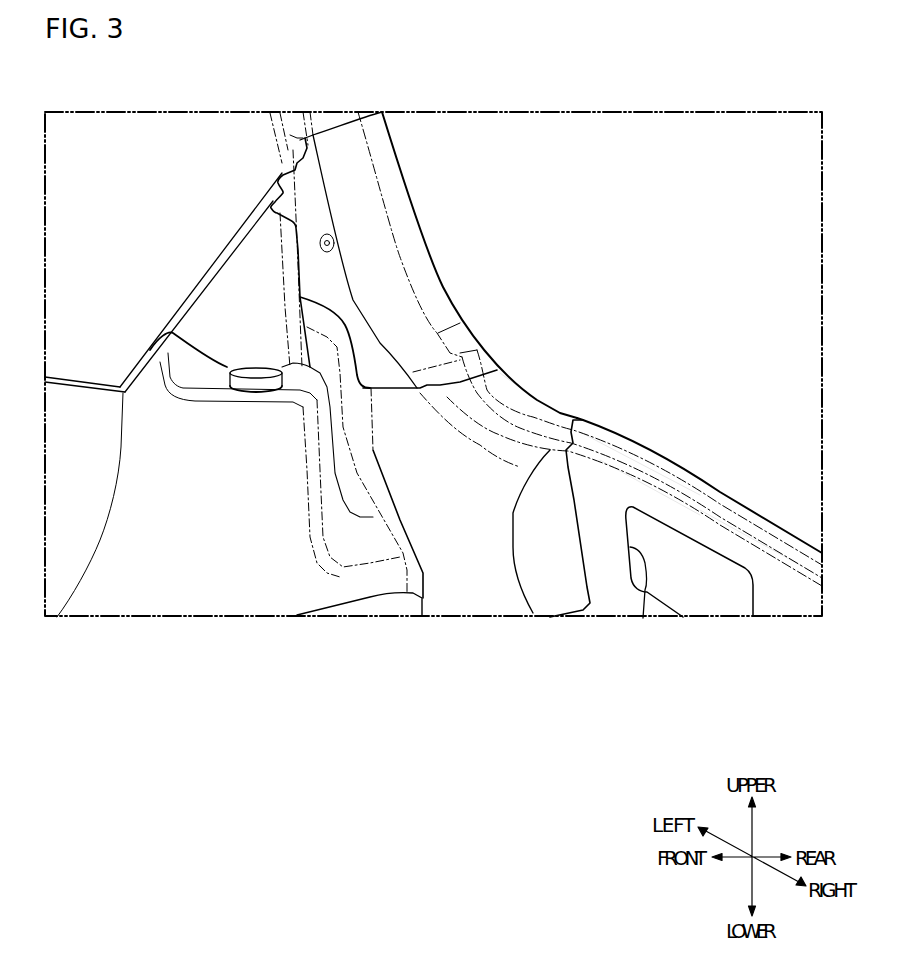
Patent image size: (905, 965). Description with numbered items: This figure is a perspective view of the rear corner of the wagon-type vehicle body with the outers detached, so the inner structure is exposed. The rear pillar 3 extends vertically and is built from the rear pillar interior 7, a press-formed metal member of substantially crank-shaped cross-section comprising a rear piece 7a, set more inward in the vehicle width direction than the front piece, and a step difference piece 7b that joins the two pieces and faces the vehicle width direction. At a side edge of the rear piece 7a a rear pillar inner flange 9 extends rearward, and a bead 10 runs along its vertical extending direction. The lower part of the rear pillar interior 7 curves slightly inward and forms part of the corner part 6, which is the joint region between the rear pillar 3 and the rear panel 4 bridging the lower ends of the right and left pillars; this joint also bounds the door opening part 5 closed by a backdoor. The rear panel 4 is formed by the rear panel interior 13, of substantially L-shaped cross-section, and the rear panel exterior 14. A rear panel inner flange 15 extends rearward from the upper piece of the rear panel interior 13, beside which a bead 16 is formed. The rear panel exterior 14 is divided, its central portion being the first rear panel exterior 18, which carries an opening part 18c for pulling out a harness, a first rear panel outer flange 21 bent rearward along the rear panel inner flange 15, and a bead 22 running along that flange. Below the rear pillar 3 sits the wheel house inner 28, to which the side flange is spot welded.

The rear pillar 3 is at (420, 202).
The rear panel 4 is at (660, 428).
The door opening part 5 is at (641, 254).
The corner part 6 is at (409, 604).
The rear pillar interior 7 is at (404, 266).
The rear piece 7a is at (350, 176).
The step difference piece 7b is at (313, 262).
The rear pillar inner flange 9 is at (443, 290).
The bead 10 is at (443, 330).
The rear panel interior 13 is at (493, 577).
The rear panel exterior 14 is at (759, 538).
The rear panel inner flange 15 is at (513, 393).
The bead 16 is at (533, 613).
The first rear panel exterior 18 is at (790, 597).
The opening part 18c is at (643, 618).
The first rear panel outer flange 21 is at (616, 439).
The bead 22 is at (680, 500).
The wheel house inner 28 is at (230, 602).